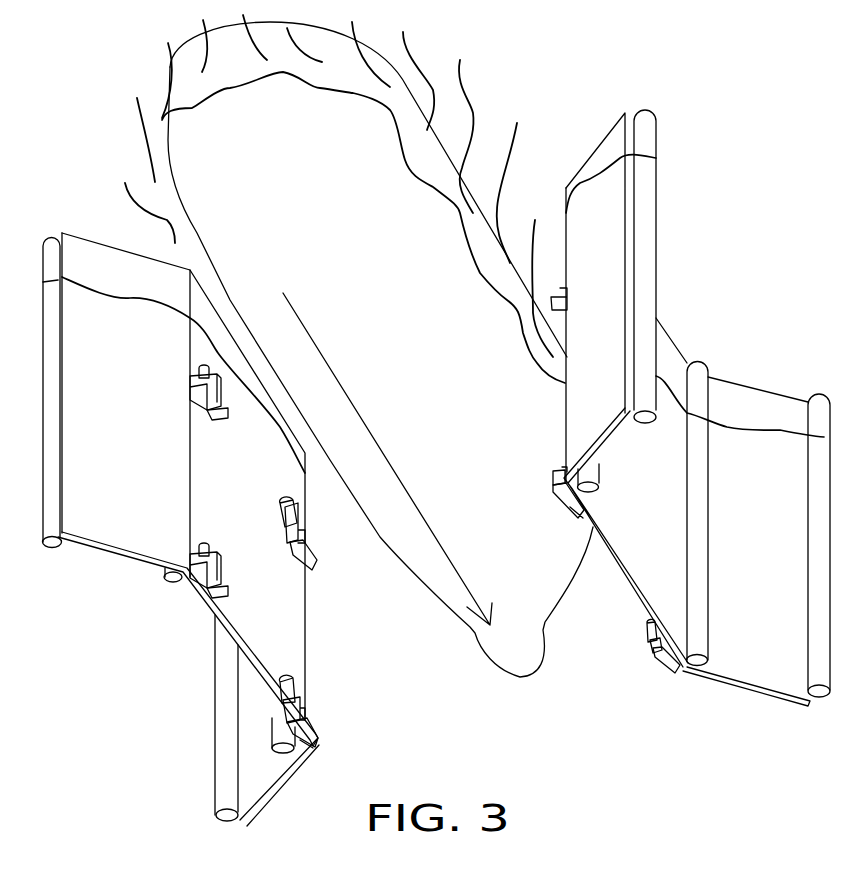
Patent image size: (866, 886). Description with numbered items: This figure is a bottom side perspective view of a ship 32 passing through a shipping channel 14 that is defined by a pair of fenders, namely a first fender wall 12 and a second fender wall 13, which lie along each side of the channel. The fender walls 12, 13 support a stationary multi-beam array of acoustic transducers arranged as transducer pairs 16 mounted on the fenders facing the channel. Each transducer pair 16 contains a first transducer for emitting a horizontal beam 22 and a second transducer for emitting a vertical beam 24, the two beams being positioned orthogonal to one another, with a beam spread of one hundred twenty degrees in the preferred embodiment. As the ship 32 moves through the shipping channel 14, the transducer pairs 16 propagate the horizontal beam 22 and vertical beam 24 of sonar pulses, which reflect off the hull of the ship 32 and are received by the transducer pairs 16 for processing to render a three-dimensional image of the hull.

The first fender wall 12 is at (743, 543).
The second fender wall 13 is at (112, 413).
The shipping channel 14 is at (513, 727).
The transducer pair 16 is at (293, 677).
The horizontal beam 22 is at (313, 730).
The vertical beam 24 is at (303, 693).
The ship 32 is at (369, 314).